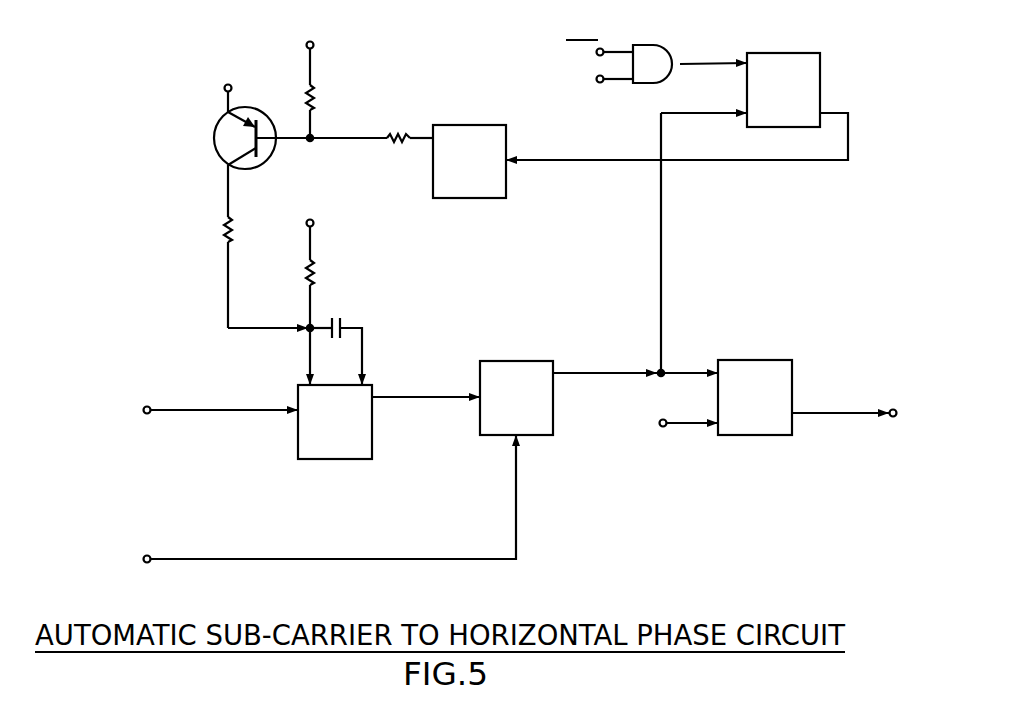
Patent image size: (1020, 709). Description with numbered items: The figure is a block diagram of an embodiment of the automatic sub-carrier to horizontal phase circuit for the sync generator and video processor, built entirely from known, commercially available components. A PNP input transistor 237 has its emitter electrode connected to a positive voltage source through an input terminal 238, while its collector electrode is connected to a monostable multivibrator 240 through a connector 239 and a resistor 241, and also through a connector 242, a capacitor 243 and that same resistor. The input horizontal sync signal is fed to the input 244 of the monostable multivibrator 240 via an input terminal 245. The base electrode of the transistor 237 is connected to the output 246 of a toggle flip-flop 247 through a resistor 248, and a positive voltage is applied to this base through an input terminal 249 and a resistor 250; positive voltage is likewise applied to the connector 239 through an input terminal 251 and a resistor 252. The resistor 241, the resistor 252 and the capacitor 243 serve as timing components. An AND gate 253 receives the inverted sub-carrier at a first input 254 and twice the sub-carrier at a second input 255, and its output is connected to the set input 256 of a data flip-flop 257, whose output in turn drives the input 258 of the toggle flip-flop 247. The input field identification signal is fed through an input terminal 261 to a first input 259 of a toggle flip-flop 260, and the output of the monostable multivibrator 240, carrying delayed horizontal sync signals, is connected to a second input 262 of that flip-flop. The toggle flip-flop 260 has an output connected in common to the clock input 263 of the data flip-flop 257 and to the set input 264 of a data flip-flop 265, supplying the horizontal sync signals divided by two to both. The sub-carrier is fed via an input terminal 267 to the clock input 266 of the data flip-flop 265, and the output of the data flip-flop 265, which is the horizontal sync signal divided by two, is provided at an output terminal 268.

The PNP input transistor 237 is at (214, 140).
The input terminal 238 is at (224, 88).
The connector 239 is at (308, 370).
The monostable multivibrator 240 is at (340, 459).
The resistor 241 is at (248, 218).
The connector 242 is at (364, 366).
The capacitor 243 is at (338, 318).
The input 244 is at (282, 413).
The input terminal 245 is at (150, 414).
The output 246 is at (410, 142).
The toggle flip-flop 247 is at (497, 100).
The resistor 248 is at (390, 136).
The input terminal 249 is at (314, 45).
The resistor 250 is at (316, 97).
The input terminal 251 is at (314, 224).
The resistor 252 is at (316, 271).
The AND gate 253 is at (655, 84).
The first input 254 is at (603, 49).
The second input 255 is at (601, 83).
The set input 256 is at (735, 50).
The data flip-flop 257 is at (754, 53).
The input 258 is at (527, 162).
The first input 259 is at (520, 450).
The toggle flip-flop 260 is at (535, 361).
The input terminal 261 is at (150, 563).
The second input 262 is at (455, 395).
The clock input 263 is at (728, 112).
The set input 264 is at (696, 371).
The data flip-flop 265 is at (765, 360).
The clock input 266 is at (700, 425).
The input terminal 267 is at (662, 427).
The output terminal 268 is at (890, 417).